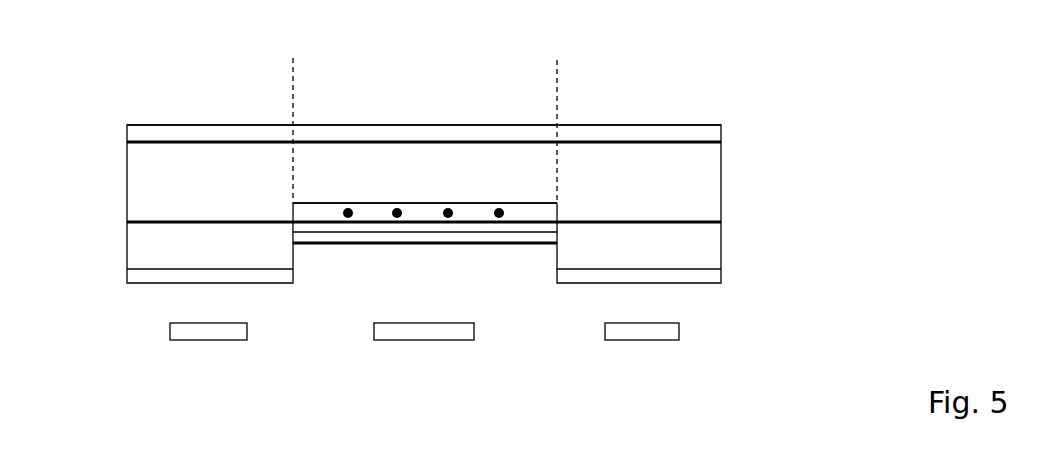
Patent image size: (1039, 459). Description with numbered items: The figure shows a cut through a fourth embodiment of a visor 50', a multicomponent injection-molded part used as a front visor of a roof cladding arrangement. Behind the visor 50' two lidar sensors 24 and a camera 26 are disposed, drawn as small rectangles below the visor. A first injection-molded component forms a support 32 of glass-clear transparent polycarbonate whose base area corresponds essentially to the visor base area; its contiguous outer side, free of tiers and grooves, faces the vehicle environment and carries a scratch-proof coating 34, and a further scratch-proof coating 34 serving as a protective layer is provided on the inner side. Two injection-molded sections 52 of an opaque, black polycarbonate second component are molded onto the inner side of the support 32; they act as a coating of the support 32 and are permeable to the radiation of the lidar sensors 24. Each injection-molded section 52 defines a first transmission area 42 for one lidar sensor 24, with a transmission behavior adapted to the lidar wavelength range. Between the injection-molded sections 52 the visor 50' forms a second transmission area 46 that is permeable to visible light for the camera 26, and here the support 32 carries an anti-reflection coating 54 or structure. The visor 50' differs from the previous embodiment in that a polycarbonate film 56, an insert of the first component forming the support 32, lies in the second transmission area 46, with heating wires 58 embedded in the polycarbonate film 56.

The lidar sensor 24 is at (207, 337).
The camera 26 is at (424, 337).
The support 32 is at (692, 193).
The scratch-proof coating 34 is at (168, 130).
The first transmission area 42 is at (227, 102).
The second transmission area 46 is at (431, 102).
The visor 50' is at (485, 79).
The injection-molded section 52 is at (140, 245).
The anti-reflection coating 54 is at (413, 238).
The polycarbonate film 56 is at (480, 213).
The heating wire 58 is at (348, 218).